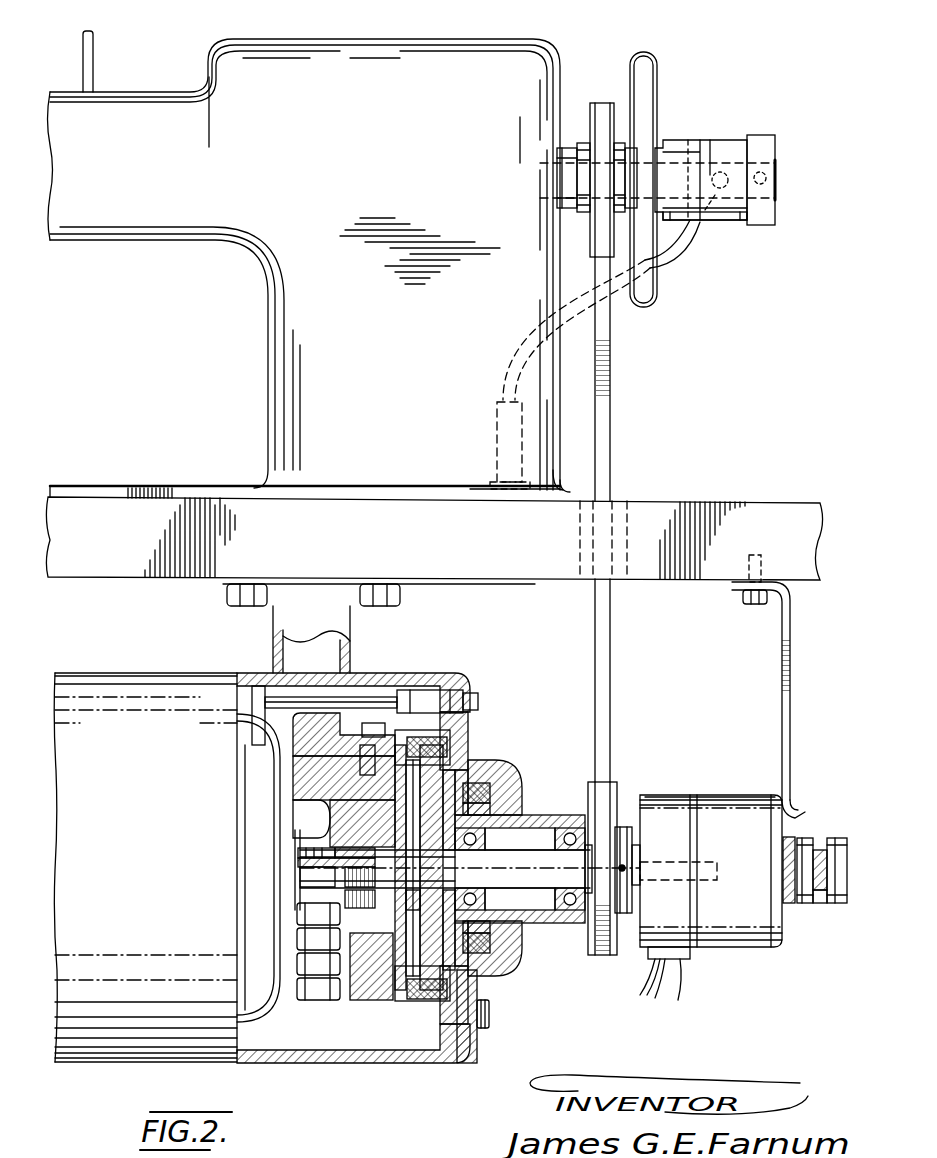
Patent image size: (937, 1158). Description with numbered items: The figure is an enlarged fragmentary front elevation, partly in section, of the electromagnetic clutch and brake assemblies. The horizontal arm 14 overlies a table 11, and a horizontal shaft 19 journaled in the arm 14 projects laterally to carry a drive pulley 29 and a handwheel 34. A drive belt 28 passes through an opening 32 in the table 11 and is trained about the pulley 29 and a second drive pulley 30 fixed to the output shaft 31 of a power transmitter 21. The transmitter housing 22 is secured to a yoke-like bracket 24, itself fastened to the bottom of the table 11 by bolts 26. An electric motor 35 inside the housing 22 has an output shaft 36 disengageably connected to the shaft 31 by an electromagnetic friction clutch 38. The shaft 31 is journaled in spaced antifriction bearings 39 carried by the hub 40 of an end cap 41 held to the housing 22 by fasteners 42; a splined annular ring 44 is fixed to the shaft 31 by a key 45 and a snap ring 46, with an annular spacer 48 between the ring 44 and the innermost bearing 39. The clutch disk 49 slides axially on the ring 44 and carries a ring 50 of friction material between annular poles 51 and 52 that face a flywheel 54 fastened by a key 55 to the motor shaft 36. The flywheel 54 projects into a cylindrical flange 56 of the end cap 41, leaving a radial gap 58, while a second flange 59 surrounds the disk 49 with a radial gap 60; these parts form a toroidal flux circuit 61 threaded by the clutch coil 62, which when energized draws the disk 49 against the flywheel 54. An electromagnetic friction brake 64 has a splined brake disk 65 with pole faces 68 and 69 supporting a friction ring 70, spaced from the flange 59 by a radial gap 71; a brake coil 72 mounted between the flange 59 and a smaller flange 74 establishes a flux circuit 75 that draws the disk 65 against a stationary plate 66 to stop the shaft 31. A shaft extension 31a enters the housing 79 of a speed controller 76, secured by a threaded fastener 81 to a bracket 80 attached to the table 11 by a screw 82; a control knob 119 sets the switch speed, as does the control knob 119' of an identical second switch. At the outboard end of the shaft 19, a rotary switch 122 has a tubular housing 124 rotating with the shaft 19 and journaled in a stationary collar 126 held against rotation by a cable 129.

The horizontal arm 14 is at (122, 241).
The table 11 is at (146, 497).
The opening 32 is at (628, 510).
The drive pulley 29 is at (592, 110).
The drive belt 28 is at (615, 352).
The drive pulley 30 is at (605, 955).
The handwheel 34 is at (660, 270).
The shaft 19 is at (688, 158).
The rotary switch 122 is at (733, 146).
The stationary collar 126 is at (775, 150).
The tubular housing 124 is at (735, 220).
The cable 129 is at (712, 190).
The yoke-like bracket 24 is at (273, 622).
The bolts 26 is at (395, 600).
The power transmitter 21 is at (143, 662).
The housing 22 is at (247, 675).
The electric motor 35 is at (243, 940).
The cylindrical flange 56 is at (410, 1050).
The flywheel 54 is at (330, 770).
The ring of friction material 50 is at (330, 788).
The annular flange 51 is at (310, 812).
The key 55 is at (298, 850).
The motor output shaft 36 is at (298, 862).
The electromagnetic friction clutch 38 is at (350, 912).
The annular radial gap 58 is at (356, 1000).
The annular flange 52 is at (382, 728).
The clutch disk 49 is at (400, 830).
The snap ring 46 is at (412, 848).
The key 45 is at (406, 900).
The flux circuit 61 is at (400, 745).
The clutch coil 62 is at (425, 740).
The fasteners 42 is at (470, 695).
The end cap 41 is at (462, 730).
The hub 40 is at (505, 770).
The electromagnetic friction brake 64 is at (466, 778).
The radial gap 71 is at (472, 755).
The cylindrical flange 74 is at (482, 802).
The antifriction bearings 39 is at (520, 825).
The annular spacer 48 is at (470, 840).
The flange 68 is at (490, 915).
The brake disk 65 is at (585, 850).
The splined annular ring 44 is at (472, 886).
The brake coil 72 is at (492, 945).
The flux circuit 75 is at (498, 956).
The ring of frictional material 70 is at (466, 958).
The stationary plate 66 is at (470, 968).
The radial gap 60 is at (388, 1001).
The cylindrical flange 59 is at (440, 1000).
The flange 69 is at (457, 1003).
The output shaft 31 is at (597, 848).
The shaft extension 31a is at (700, 862).
The housing 79 is at (730, 795).
The speed controller 76 is at (752, 954).
The control knob 119 is at (815, 855).
The control knob 119' is at (815, 918).
The bracket 80 is at (782, 690).
The screw 82 is at (743, 598).
The threaded fastener 81 is at (798, 808).